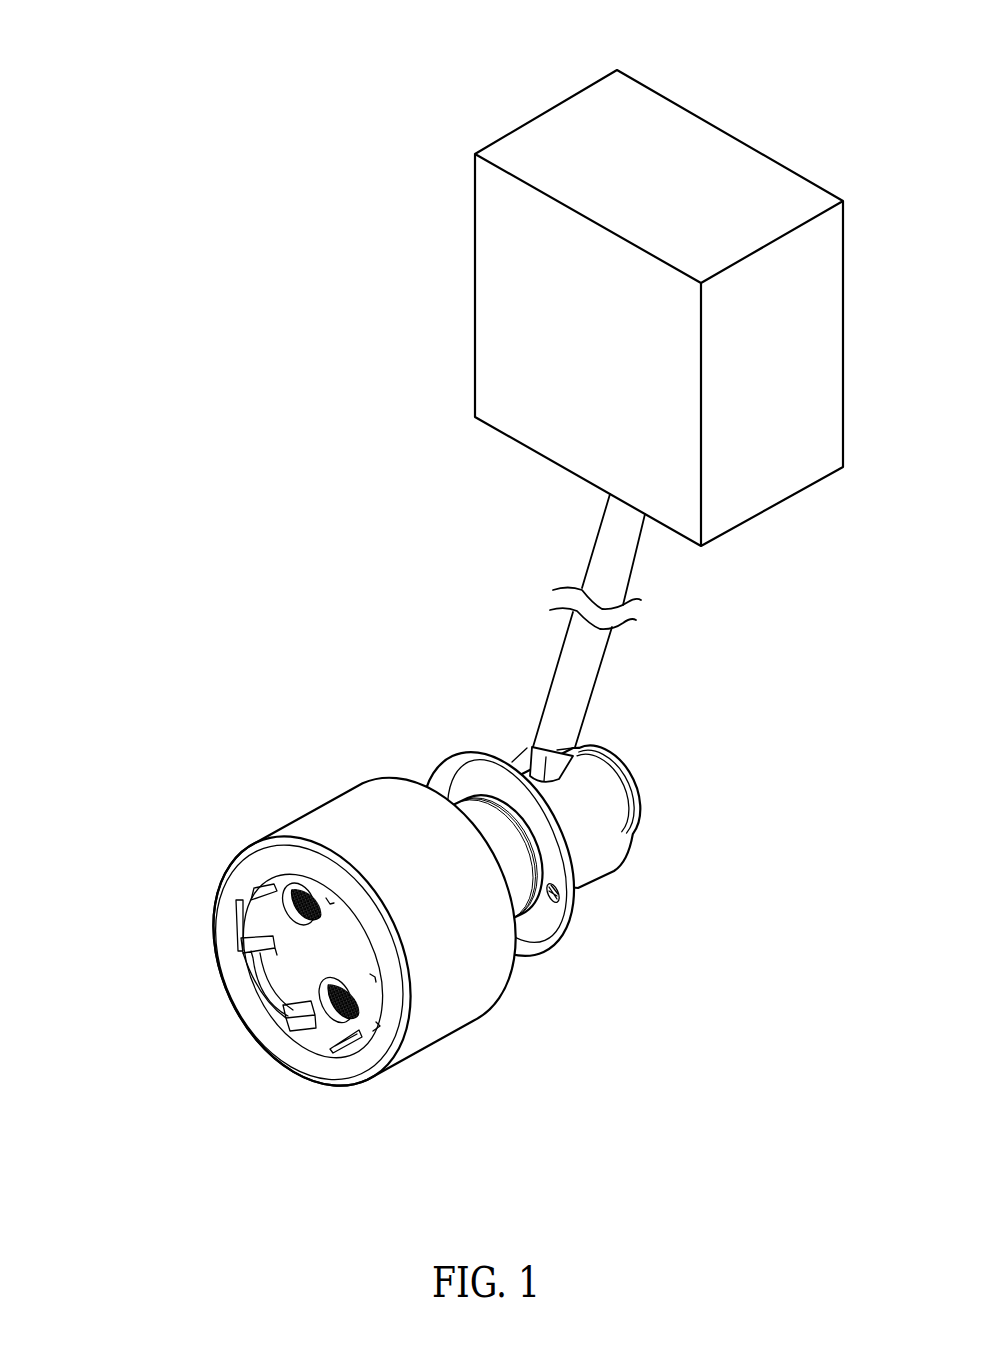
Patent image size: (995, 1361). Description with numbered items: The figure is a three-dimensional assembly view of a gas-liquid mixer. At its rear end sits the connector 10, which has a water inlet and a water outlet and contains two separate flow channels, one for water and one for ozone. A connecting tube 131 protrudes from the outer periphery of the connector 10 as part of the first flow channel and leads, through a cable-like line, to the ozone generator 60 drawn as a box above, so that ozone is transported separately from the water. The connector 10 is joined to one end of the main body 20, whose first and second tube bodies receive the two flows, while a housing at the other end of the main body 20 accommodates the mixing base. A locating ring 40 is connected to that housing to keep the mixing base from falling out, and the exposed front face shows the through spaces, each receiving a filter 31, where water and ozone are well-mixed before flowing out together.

The connector 10 is at (636, 836).
The main body 20 is at (352, 780).
The filter 31 is at (360, 1002).
The locating ring 40 is at (251, 993).
The ozone generator 60 is at (740, 128).
The connecting tube 131 is at (543, 765).